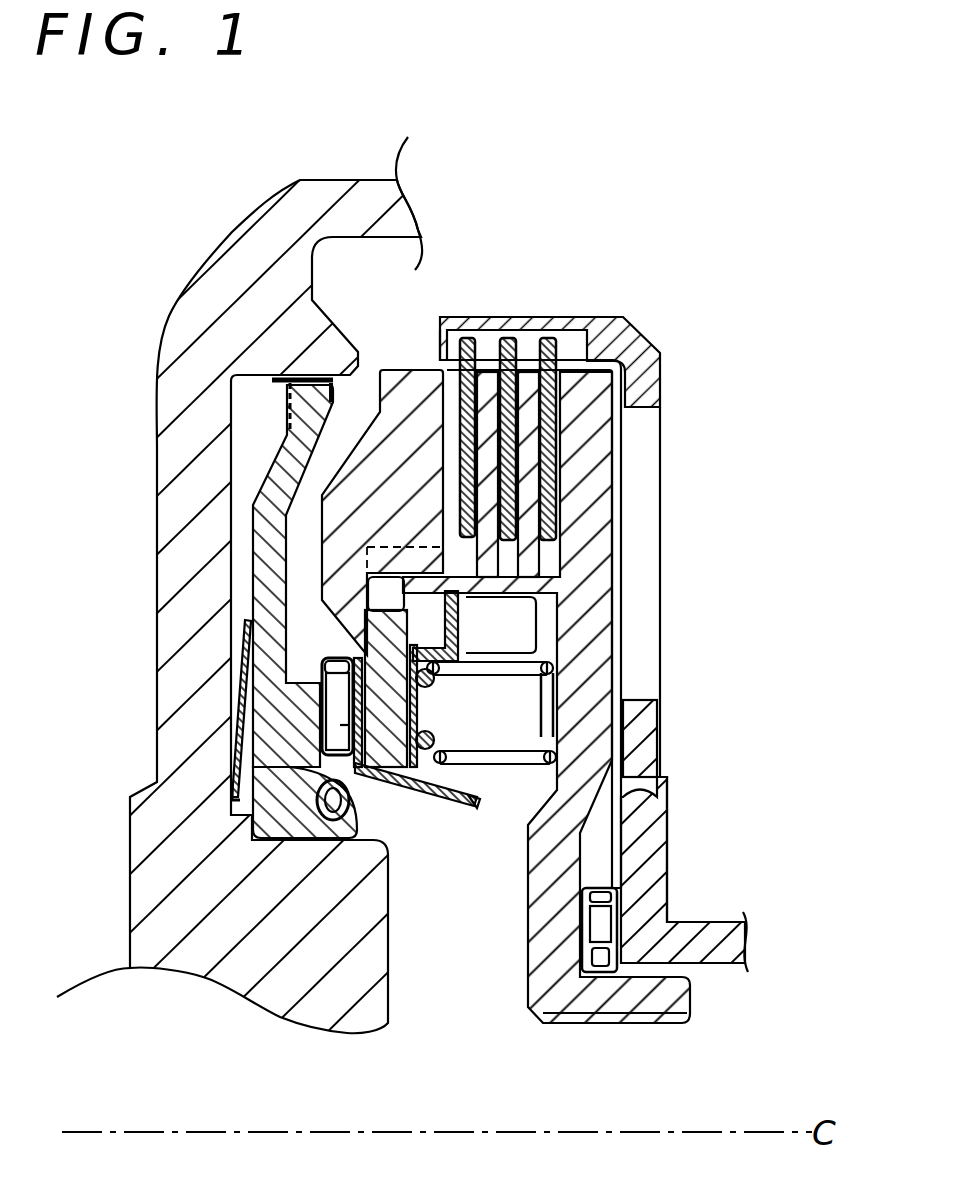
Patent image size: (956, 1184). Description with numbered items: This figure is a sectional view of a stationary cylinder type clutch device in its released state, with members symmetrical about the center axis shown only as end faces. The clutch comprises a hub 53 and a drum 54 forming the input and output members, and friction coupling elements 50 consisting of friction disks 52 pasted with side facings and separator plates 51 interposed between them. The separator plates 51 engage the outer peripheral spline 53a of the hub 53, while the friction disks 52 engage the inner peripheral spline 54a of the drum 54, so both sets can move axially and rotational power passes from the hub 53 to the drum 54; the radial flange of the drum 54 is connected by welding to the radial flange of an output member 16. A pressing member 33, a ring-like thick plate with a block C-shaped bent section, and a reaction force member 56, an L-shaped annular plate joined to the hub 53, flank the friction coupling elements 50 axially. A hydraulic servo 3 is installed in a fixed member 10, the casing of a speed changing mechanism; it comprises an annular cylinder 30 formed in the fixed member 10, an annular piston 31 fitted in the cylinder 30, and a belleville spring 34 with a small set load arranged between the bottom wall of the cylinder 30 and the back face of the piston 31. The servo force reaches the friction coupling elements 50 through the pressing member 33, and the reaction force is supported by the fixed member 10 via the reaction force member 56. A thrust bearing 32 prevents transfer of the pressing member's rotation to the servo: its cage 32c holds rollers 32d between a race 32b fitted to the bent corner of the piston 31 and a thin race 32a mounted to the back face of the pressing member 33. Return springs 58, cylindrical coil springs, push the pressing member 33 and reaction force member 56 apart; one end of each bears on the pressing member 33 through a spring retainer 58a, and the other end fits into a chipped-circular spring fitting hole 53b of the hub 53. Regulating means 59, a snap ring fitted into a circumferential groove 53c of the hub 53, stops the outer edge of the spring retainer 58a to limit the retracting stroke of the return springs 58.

The fixed member 10 is at (210, 292).
The hydraulic servo 3 is at (343, 333).
The annular cylinder 30 is at (276, 436).
The pressing member 33 is at (382, 417).
The friction coupling elements 50 is at (456, 368).
The separator plates 51 is at (539, 334).
The friction disks 52 is at (509, 334).
The drum 54 is at (597, 317).
The inner peripheral spline 54a is at (441, 314).
The reaction force member 56 is at (614, 455).
The hub 53 is at (549, 592).
The outer peripheral spline 53a is at (450, 563).
The spring fitting holes 53b is at (541, 712).
The circumferential groove 53c is at (461, 598).
The return springs 58 is at (506, 764).
The spring retainer 58a is at (461, 643).
The regulating means 59 is at (386, 594).
The thrust bearing 32 is at (323, 662).
The race 32a is at (463, 808).
The race 32b is at (243, 803).
The cage 32c is at (400, 790).
The rollers 32d is at (399, 688).
The annular piston 31 is at (357, 808).
The belleville spring 34 is at (243, 653).
The output member 16 is at (714, 921).